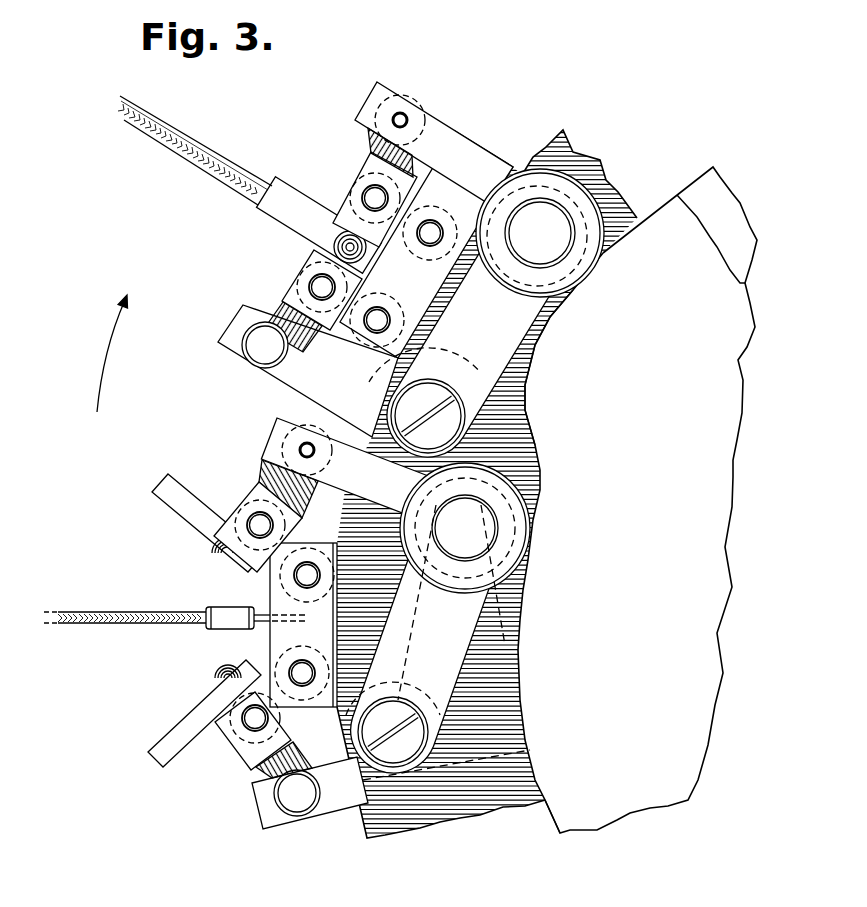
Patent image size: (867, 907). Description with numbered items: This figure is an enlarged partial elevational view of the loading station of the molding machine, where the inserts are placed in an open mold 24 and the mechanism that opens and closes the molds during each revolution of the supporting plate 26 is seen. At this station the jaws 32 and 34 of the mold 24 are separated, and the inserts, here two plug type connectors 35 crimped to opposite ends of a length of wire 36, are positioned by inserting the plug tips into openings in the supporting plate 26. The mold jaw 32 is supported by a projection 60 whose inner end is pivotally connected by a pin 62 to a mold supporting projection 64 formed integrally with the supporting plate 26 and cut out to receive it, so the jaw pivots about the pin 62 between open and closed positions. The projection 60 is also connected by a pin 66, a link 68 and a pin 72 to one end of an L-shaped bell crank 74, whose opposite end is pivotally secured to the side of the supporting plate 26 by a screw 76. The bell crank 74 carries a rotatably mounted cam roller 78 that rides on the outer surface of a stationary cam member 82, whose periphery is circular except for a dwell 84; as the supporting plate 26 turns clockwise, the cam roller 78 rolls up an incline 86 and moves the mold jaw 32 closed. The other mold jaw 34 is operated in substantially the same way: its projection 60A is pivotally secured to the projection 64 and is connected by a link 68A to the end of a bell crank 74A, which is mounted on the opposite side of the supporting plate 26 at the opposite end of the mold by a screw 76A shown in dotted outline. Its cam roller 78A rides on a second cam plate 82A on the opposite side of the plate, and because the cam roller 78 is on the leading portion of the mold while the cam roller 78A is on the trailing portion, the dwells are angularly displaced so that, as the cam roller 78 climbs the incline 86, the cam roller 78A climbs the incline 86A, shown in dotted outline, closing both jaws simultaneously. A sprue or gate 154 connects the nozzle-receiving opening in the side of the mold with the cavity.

The mold 24 is at (322, 150).
The supporting plate 26 is at (594, 162).
The mold jaw 32 is at (283, 173).
The mold jaw 34 is at (256, 208).
The plug type connector 35 is at (224, 611).
The wire 36 is at (124, 124).
The projection 60 is at (412, 186).
The projection 60A is at (311, 262).
The pin 62 is at (432, 228).
The mold supporting projection 64 is at (270, 639).
The pin 66 is at (364, 196).
The link 68 is at (372, 144).
The link 68A is at (282, 305).
The pin 72 is at (404, 117).
The bell crank 74 is at (513, 322).
The bell crank 74A is at (348, 795).
The screw 76 is at (434, 393).
The screw 76A is at (289, 399).
The cam roller 78 is at (540, 170).
The cam roller 78A is at (553, 756).
The cam member 82 is at (641, 797).
The cam plate 82A is at (728, 200).
The dwell 84 is at (553, 817).
The incline 86 is at (524, 417).
The incline 86A is at (519, 598).
The sprue or gate 154 is at (226, 679).